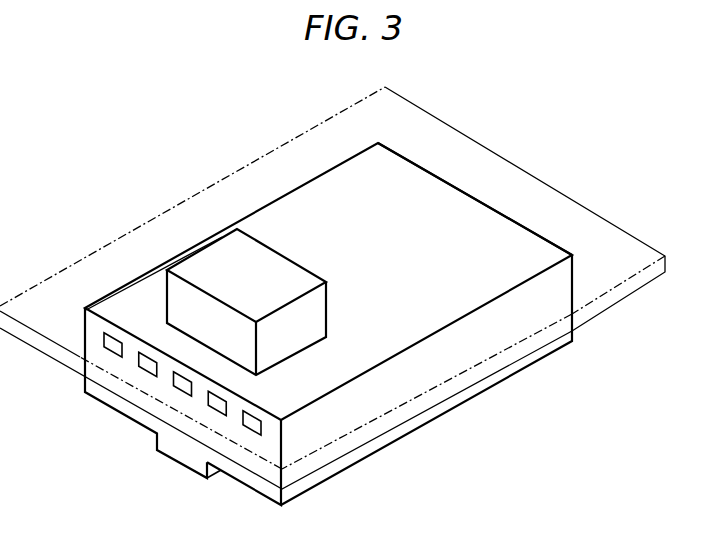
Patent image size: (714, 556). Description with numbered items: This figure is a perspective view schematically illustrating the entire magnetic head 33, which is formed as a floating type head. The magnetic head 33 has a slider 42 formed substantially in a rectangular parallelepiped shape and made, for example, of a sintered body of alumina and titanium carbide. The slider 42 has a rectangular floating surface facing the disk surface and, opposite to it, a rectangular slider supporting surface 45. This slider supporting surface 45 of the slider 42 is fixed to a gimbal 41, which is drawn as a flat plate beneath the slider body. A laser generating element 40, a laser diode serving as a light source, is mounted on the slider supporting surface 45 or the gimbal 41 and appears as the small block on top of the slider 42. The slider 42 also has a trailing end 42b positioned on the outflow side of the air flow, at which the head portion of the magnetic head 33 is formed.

The magnetic head 33 is at (303, 301).
The laser generating element 40 is at (215, 262).
The gimbal 41 is at (77, 280).
The slider 42 is at (303, 301).
The trailing end 42b is at (124, 369).
The slider supporting surface 45 is at (465, 214).